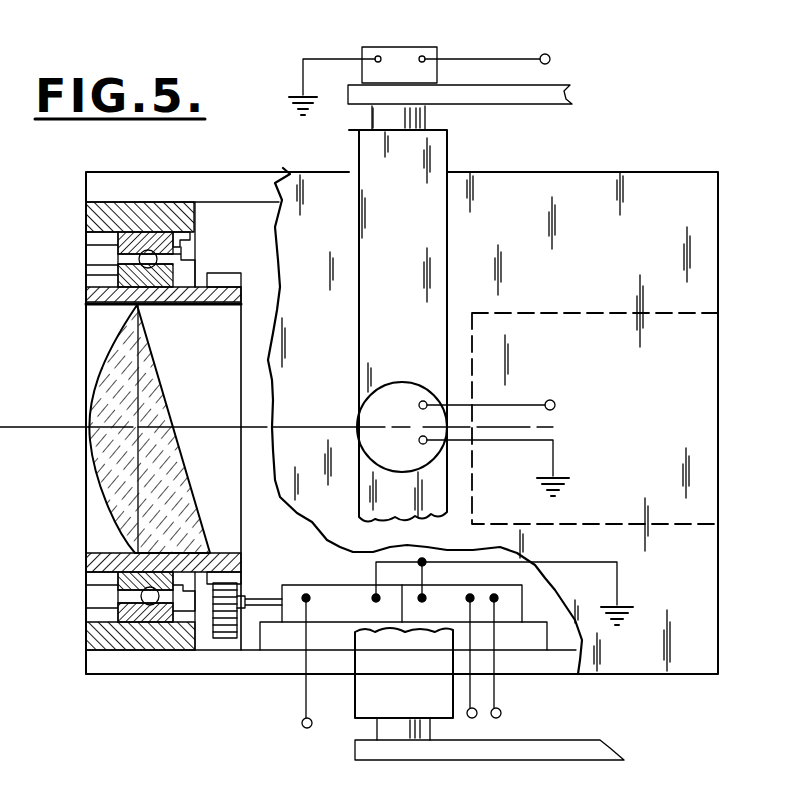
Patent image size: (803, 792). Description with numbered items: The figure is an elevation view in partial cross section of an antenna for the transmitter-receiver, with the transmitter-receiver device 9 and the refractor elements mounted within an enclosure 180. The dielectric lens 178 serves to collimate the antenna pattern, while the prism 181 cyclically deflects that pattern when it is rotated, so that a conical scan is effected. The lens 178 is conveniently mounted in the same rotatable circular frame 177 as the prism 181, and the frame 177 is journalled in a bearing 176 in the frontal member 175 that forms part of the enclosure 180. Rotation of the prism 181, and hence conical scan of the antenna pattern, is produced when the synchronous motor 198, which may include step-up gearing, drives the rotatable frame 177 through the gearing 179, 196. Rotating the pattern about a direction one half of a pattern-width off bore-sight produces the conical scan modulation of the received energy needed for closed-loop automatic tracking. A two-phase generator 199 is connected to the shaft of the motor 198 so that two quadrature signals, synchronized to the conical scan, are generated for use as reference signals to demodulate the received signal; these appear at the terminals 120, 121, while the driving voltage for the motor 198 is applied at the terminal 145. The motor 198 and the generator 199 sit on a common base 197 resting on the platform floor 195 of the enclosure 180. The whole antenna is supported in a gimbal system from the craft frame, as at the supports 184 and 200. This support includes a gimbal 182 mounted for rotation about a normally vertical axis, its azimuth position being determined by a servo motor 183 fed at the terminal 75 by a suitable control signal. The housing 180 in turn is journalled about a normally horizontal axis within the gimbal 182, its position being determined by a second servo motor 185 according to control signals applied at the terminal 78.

The transmitter-receiver device 9 is at (583, 313).
The terminal 75 is at (549, 55).
The terminal 78 is at (556, 403).
The terminal 120 is at (477, 716).
The terminal 121 is at (500, 712).
The terminal 145 is at (302, 728).
The frontal member 175 is at (86, 224).
The bearing 176 is at (118, 259).
The rotatable circular frame 177 is at (86, 298).
The dielectric lens 178 is at (92, 352).
The gearing 179 is at (222, 273).
The enclosure 180 is at (283, 168).
The prism 181 is at (158, 346).
The gimbal 182 is at (350, 158).
The servo motor 183 is at (400, 48).
The gimbal system support 184 is at (496, 107).
The servo motor 185 is at (396, 380).
The platform floor 195 is at (88, 670).
The gearing 196 is at (223, 643).
The common base 197 is at (270, 650).
The synchronous motor 198 is at (322, 585).
The two-phase generator 199 is at (526, 592).
The gimbal system support 200 is at (605, 740).